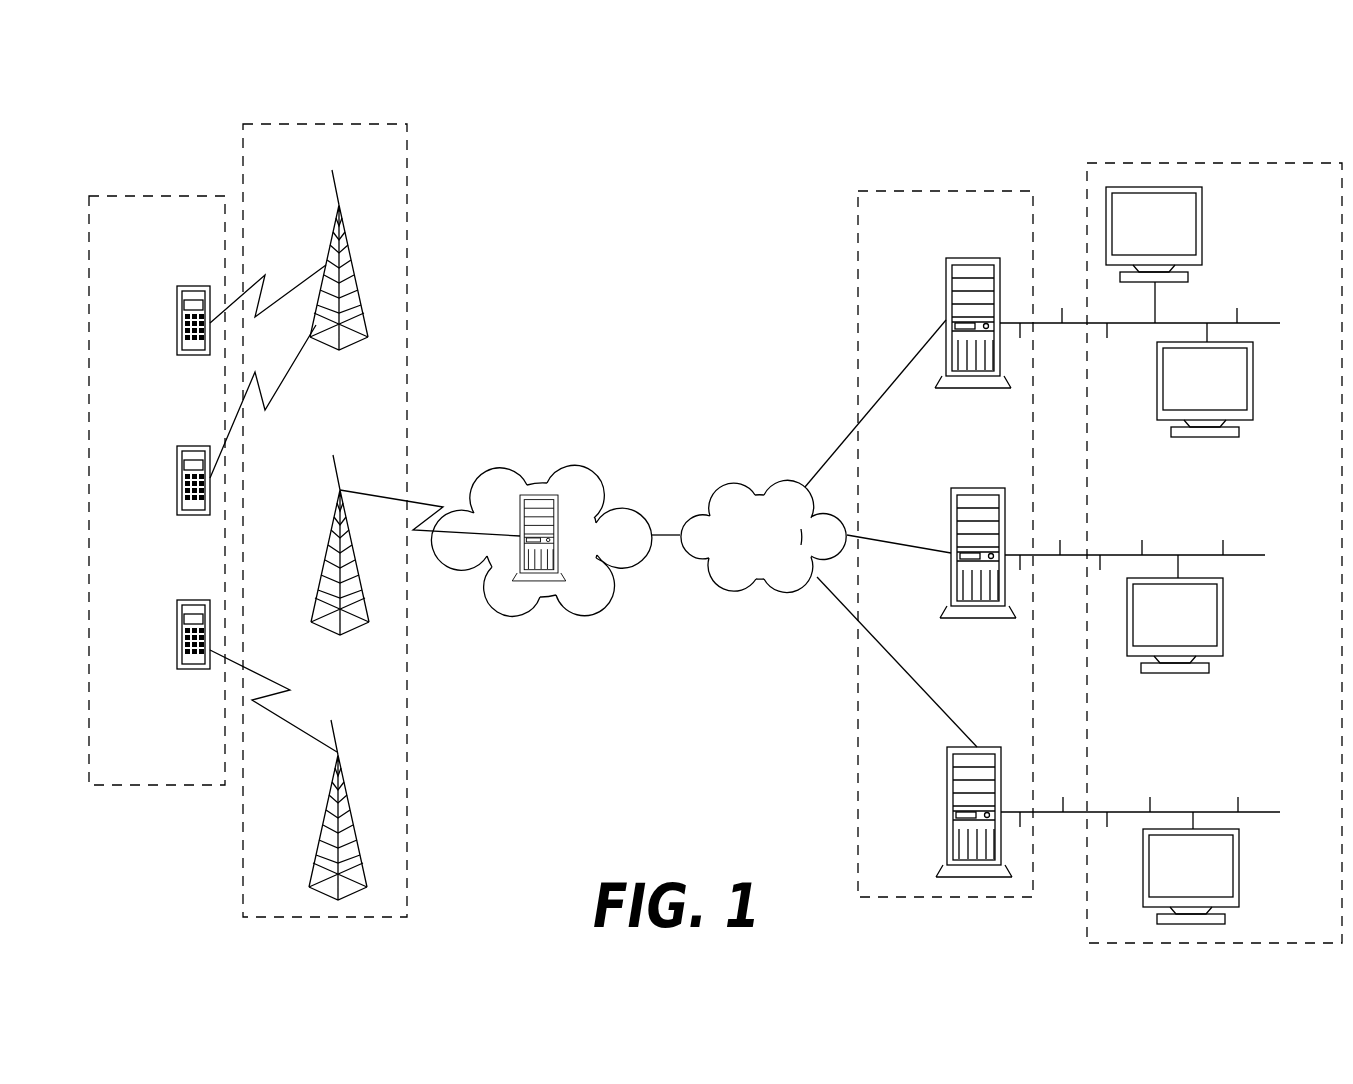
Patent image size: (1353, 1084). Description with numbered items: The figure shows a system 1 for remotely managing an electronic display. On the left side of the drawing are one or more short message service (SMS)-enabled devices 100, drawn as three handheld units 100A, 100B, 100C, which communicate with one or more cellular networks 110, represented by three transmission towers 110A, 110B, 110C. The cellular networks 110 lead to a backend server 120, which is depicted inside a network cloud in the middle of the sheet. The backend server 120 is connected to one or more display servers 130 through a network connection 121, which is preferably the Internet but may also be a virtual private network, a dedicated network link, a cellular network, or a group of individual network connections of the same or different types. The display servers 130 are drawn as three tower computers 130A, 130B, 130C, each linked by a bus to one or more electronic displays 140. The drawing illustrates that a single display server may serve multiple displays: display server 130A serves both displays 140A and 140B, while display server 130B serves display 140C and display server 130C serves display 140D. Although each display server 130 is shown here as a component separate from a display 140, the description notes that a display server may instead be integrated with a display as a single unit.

The system 1 is at (170, 118).
The short message service (SMS)-enabled devices 100 is at (128, 217).
The SMS-enabled device 100A is at (177, 300).
The SMS-enabled device 100B is at (177, 460).
The SMS-enabled device 100C is at (177, 614).
The cellular networks 110 is at (302, 145).
The cellular network 110A is at (330, 237).
The cellular network 110B is at (330, 520).
The cellular network 110C is at (327, 787).
The backend server 120 is at (505, 467).
The network connection 121 is at (730, 482).
The display servers 130 is at (897, 210).
The display server 130A is at (946, 275).
The display server 130B is at (951, 508).
The display server 130C is at (947, 762).
The electronic displays 140 is at (1127, 183).
The electronic display 140A is at (1202, 205).
The electronic display 140B is at (1252, 362).
The electronic display 140C is at (1223, 598).
The electronic display 140D is at (1238, 855).